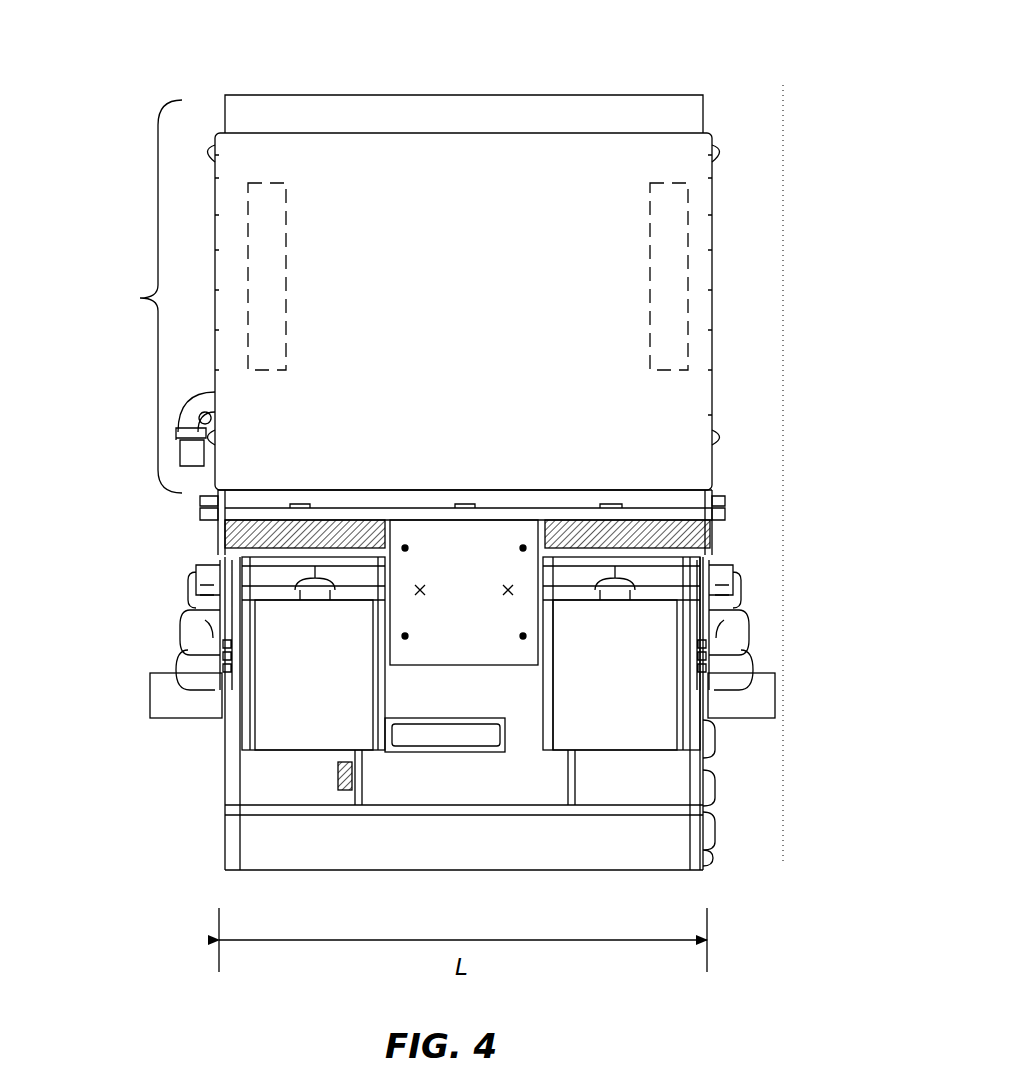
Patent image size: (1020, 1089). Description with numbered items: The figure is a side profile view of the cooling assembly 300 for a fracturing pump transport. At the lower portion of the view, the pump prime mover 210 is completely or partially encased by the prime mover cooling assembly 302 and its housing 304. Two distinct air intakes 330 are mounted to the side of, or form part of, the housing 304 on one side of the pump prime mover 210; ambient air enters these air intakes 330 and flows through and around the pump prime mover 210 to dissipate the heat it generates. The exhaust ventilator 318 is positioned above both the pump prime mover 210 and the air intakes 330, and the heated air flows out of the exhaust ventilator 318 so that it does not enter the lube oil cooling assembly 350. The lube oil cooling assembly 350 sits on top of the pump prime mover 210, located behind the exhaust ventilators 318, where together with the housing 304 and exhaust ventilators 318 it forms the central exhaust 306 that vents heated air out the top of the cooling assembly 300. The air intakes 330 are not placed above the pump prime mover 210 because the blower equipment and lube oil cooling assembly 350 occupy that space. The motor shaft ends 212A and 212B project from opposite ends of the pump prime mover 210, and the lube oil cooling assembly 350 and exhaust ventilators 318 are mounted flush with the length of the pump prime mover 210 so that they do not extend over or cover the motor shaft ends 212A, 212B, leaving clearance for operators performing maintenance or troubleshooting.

The cooling assembly 300 is at (150, 50).
The central exhaust 306 is at (650, 95).
The prime mover cooling assembly 302 is at (712, 343).
The lube oil cooling assembly 350 is at (688, 240).
The exhaust ventilator 318 is at (152, 296).
The housing 304 is at (680, 440).
The pump prime mover 210 is at (270, 782).
The air intake 330 is at (280, 732).
The motor shaft end 212A is at (148, 680).
The motor shaft end 212B is at (780, 680).